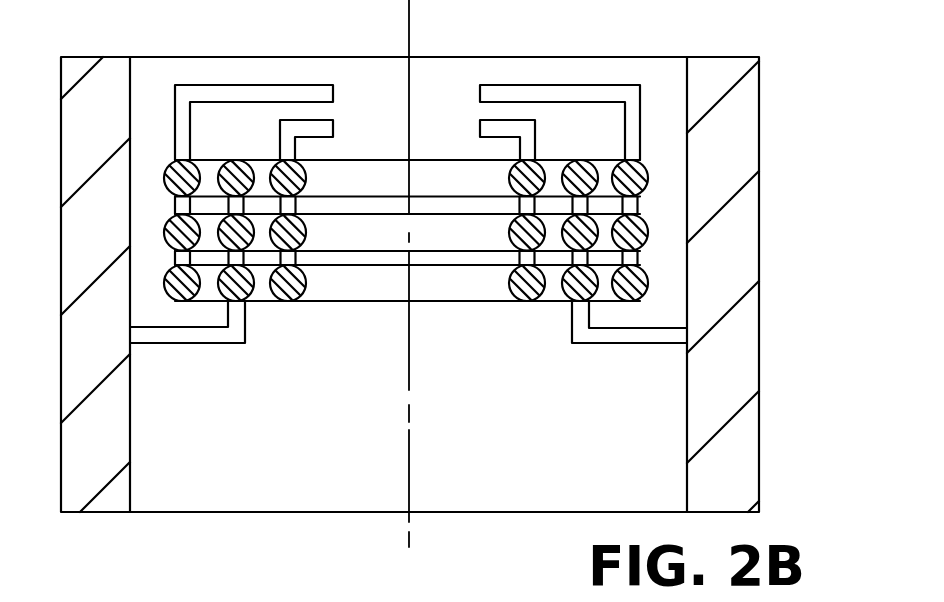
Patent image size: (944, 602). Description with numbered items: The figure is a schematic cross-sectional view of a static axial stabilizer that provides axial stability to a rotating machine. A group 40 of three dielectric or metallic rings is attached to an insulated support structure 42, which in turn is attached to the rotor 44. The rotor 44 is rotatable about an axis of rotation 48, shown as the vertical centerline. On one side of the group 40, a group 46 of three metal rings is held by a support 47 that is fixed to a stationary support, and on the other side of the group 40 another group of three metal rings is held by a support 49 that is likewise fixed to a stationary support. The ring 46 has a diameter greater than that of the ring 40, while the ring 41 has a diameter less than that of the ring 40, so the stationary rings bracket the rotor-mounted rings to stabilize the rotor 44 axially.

The group of three dielectric or metallic rings 40 is at (245, 297).
The ring 41 is at (304, 294).
The insulated support structure 42 is at (194, 345).
The rotor 44 is at (131, 456).
The group of three metal rings 46 is at (167, 165).
The support 47 is at (334, 94).
The axis of rotation 48 is at (409, 29).
The support 49 is at (334, 130).